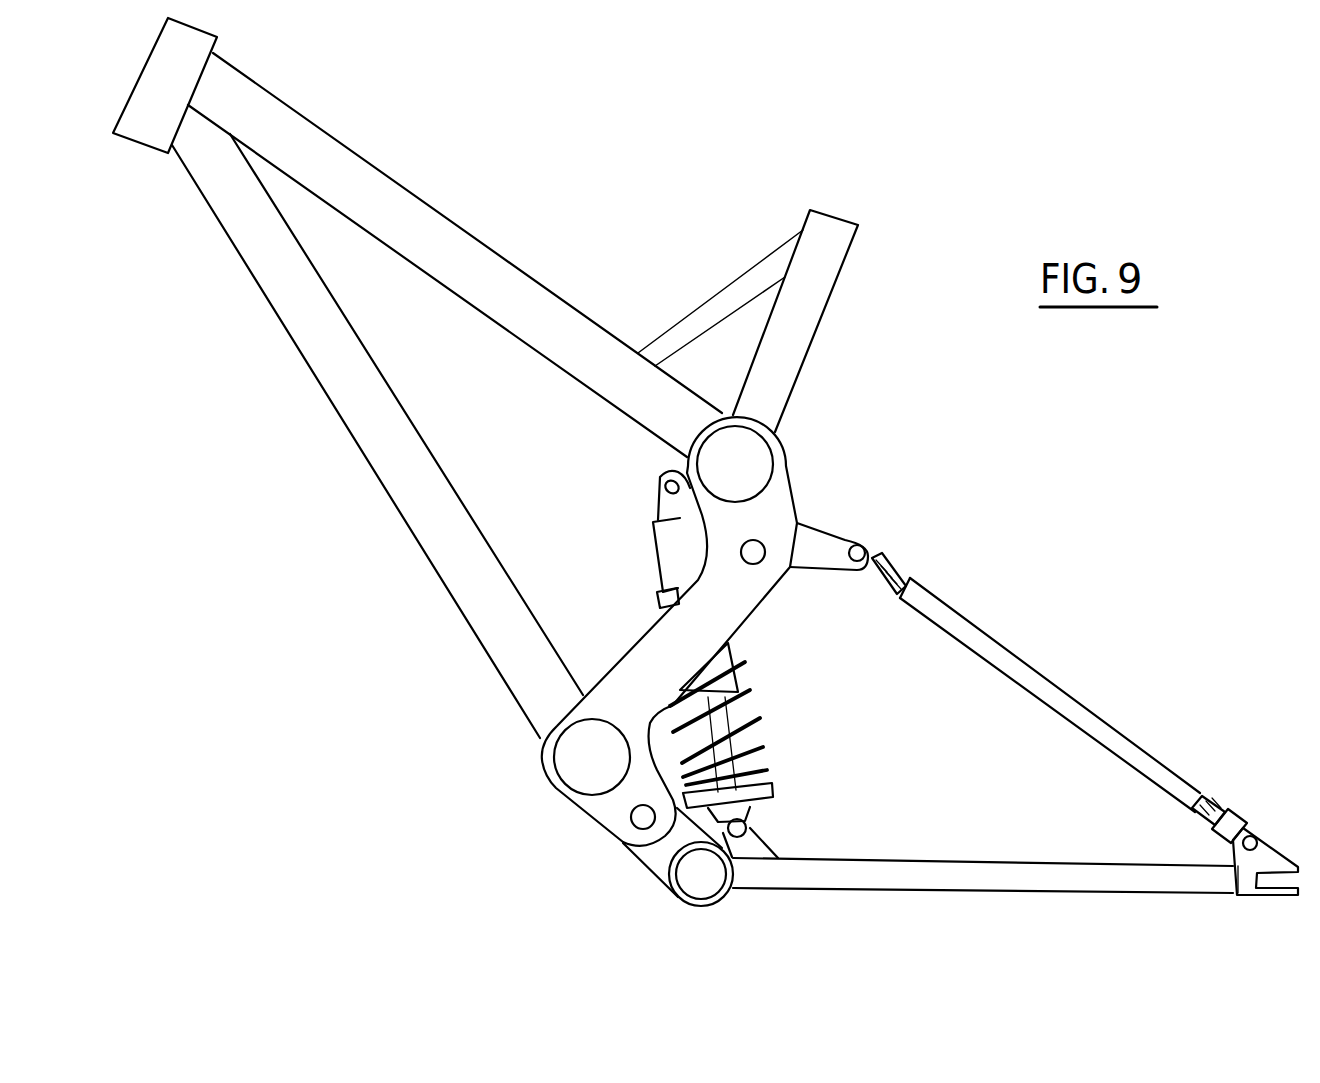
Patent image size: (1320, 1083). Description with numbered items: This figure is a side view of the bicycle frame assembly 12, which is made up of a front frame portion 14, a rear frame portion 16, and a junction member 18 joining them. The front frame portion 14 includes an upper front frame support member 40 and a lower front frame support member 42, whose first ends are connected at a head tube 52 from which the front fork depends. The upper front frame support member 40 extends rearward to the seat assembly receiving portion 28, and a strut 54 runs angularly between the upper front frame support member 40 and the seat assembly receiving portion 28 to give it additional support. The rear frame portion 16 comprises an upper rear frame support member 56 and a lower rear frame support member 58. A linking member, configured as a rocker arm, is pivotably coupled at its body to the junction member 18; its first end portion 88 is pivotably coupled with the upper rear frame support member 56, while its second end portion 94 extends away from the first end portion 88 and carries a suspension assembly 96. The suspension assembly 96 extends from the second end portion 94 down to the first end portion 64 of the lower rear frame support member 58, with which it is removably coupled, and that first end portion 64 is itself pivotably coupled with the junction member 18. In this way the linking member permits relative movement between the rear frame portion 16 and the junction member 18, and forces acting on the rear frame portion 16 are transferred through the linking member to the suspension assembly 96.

The bicycle frame assembly 12 is at (844, 177).
The front frame portion 14 is at (258, 401).
The rear frame portion 16 is at (1058, 582).
The junction member 18 is at (787, 462).
The seat assembly receiving portion 28 is at (833, 283).
The upper front frame support member 40 is at (458, 250).
The lower front frame support member 42 is at (398, 480).
The head tube 52 is at (148, 136).
The strut 54 is at (730, 298).
The upper rear frame support member 56 is at (1017, 658).
The lower rear frame support member 58 is at (942, 885).
The first end portion of lower rear frame support member 64 is at (757, 880).
The first end portion of linking member 88 is at (842, 540).
The second end portion of linking member 94 is at (660, 480).
The suspension assembly 96 is at (670, 560).